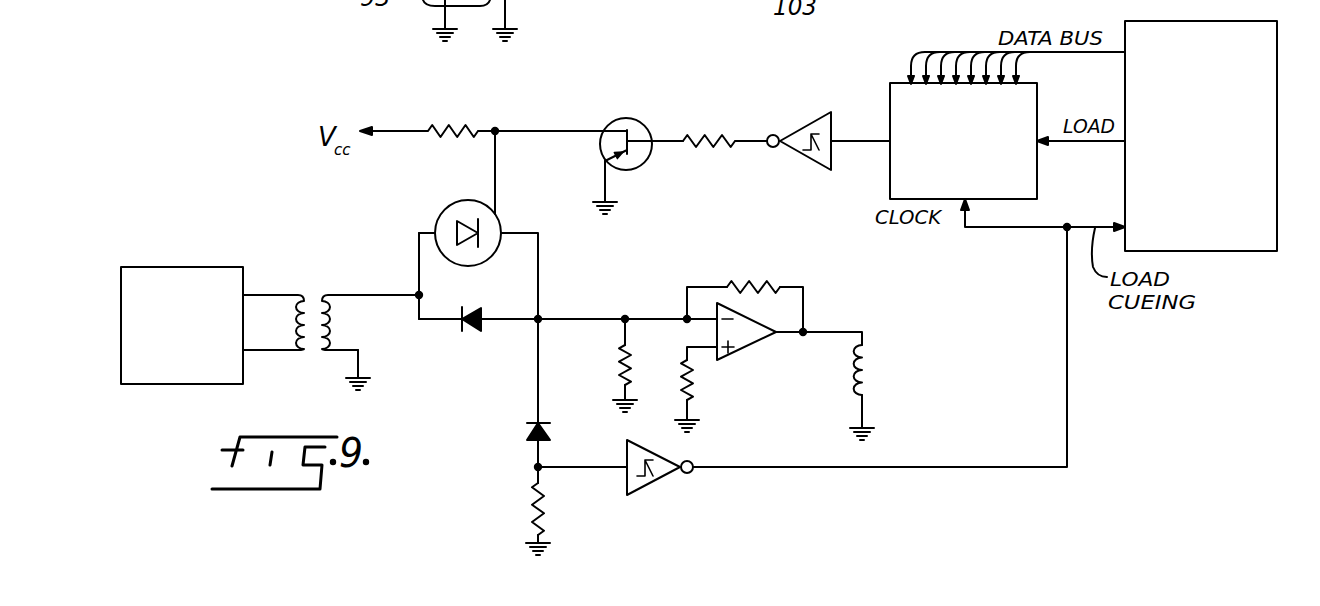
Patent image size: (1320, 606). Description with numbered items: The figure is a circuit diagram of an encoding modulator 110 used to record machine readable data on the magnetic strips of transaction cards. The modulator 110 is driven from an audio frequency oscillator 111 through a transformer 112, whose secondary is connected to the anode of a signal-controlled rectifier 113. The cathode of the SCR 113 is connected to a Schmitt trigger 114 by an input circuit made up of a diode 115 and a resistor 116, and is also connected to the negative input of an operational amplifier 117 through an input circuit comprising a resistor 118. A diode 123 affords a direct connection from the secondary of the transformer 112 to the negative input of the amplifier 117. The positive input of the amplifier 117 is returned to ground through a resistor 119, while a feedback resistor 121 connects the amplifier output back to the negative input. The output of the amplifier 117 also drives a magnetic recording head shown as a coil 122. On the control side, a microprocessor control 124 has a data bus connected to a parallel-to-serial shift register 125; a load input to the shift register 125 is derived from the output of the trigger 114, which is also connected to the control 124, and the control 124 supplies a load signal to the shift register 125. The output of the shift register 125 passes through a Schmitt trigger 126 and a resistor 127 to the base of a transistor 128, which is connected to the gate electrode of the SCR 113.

The modulator 110 is at (393, 230).
The audio frequency oscillator 111 is at (198, 266).
The transformer 112 is at (313, 290).
The signal-controlled rectifier 113 is at (482, 218).
The Schmitt trigger 114 is at (657, 478).
The diode 115 is at (527, 432).
The resistor 116 is at (530, 503).
The operational amplifier 117 is at (752, 350).
The resistor 118 is at (618, 356).
The resistor 119 is at (700, 388).
The feedback resistor 121 is at (762, 282).
The coil 122 is at (872, 348).
The diode 123 is at (477, 331).
The microprocessor control 124 is at (1240, 0).
The parallel-to-serial shift register 125 is at (893, 83).
The Schmitt trigger 126 is at (820, 168).
The resistor 127 is at (705, 135).
The transistor 128 is at (620, 118).